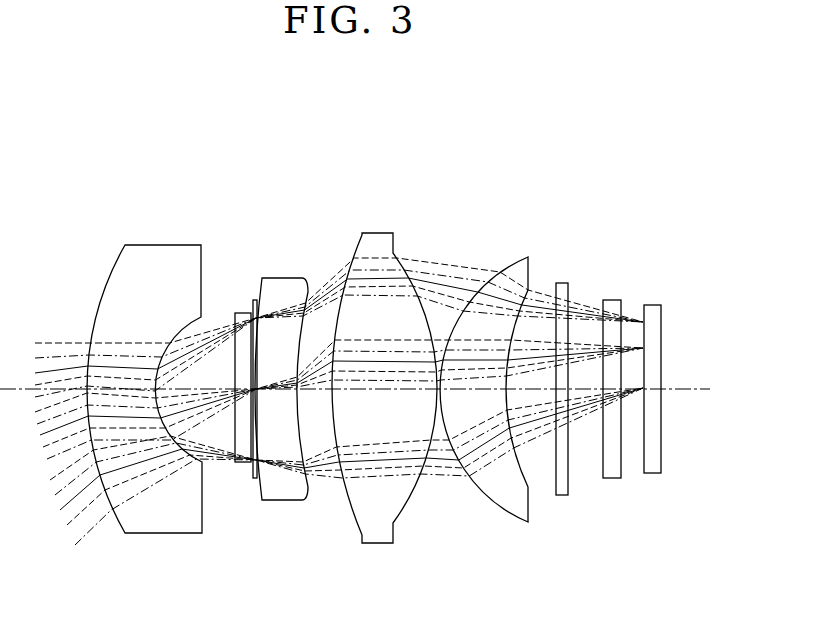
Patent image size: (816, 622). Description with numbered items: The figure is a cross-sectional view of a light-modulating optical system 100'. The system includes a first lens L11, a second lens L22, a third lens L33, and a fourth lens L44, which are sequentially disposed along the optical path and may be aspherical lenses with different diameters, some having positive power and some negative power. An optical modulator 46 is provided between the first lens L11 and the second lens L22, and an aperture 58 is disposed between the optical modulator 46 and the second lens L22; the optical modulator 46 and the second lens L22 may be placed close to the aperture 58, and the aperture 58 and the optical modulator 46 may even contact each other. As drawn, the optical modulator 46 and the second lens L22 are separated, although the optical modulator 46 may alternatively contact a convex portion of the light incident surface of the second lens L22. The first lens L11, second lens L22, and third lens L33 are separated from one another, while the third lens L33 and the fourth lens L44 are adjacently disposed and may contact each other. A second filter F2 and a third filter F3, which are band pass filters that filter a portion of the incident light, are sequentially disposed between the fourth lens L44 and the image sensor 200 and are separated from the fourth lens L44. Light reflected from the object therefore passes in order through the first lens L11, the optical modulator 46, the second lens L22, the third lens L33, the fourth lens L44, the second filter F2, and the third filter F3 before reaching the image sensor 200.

The light-modulating optical system 100' is at (352, 335).
The first lens L11 is at (160, 245).
The second lens L22 is at (280, 278).
The third lens L33 is at (377, 233).
The fourth lens L44 is at (515, 264).
The optical modulator 46 is at (243, 463).
The aperture 58 is at (255, 480).
The second filter F2 is at (562, 283).
The third filter F3 is at (610, 300).
The image sensor 200 is at (652, 305).